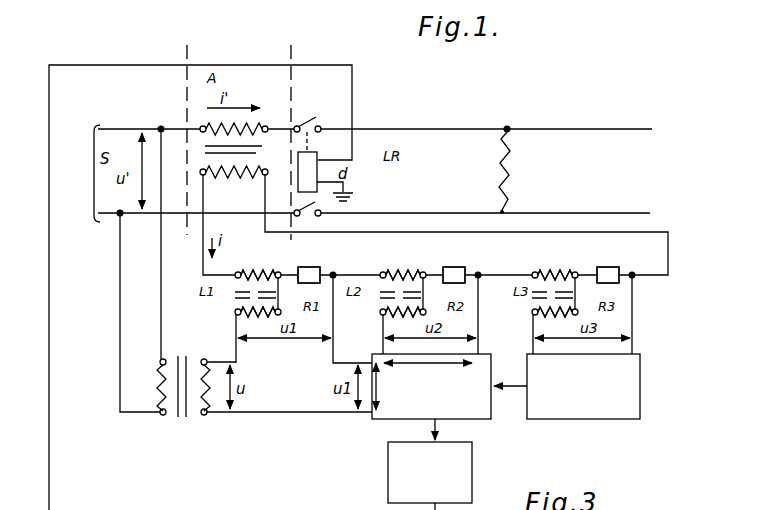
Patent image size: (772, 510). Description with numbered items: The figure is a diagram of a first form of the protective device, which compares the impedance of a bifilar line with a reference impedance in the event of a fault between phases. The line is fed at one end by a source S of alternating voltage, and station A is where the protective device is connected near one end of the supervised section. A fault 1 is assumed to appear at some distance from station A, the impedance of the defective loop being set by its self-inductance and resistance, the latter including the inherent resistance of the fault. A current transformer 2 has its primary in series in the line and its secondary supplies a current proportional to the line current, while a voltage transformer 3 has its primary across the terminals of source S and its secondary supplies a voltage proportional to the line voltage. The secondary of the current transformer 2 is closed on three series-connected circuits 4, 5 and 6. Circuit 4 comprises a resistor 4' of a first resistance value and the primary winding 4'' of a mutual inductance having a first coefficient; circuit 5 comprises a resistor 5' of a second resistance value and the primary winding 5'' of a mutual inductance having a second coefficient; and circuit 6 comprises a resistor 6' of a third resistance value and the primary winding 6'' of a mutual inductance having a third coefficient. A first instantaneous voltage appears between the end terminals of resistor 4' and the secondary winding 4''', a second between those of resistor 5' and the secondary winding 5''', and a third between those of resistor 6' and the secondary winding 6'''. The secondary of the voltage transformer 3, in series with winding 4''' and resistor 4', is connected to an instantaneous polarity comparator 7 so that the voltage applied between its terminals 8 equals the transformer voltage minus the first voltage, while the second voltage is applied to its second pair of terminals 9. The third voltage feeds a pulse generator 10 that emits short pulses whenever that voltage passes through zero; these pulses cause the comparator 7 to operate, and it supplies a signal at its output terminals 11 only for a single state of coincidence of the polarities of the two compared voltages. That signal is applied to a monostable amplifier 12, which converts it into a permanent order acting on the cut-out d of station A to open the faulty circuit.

The fault 1 is at (511, 166).
The current transformer 2 is at (258, 153).
The voltage transformer 3 is at (177, 418).
The circuit 4 is at (283, 278).
The resistor 4' is at (309, 283).
The primary winding 4'' is at (257, 262).
The secondary winding 4''' is at (239, 312).
The circuit 5 is at (407, 277).
The resistor 5' is at (454, 283).
The primary winding 5'' is at (403, 262).
The secondary winding 5''' is at (385, 312).
The circuit 6 is at (556, 277).
The resistor 6' is at (608, 283).
The primary winding 6'' is at (555, 262).
The secondary winding 6''' is at (537, 312).
The instantaneous polarity comparator 7 is at (431, 399).
The terminals 8 is at (383, 386).
The second pair of terminals 9 is at (428, 355).
The pulse generator 10 is at (587, 399).
The output terminals 11 is at (436, 430).
The monostable amplifier 12 is at (436, 484).